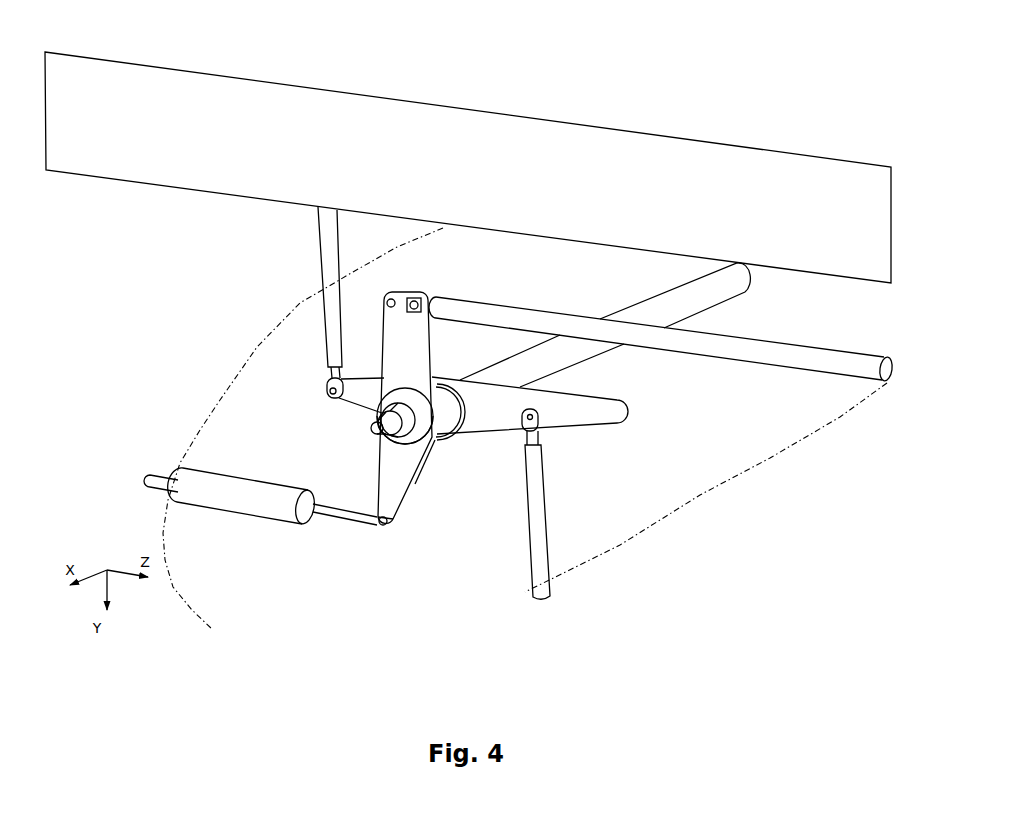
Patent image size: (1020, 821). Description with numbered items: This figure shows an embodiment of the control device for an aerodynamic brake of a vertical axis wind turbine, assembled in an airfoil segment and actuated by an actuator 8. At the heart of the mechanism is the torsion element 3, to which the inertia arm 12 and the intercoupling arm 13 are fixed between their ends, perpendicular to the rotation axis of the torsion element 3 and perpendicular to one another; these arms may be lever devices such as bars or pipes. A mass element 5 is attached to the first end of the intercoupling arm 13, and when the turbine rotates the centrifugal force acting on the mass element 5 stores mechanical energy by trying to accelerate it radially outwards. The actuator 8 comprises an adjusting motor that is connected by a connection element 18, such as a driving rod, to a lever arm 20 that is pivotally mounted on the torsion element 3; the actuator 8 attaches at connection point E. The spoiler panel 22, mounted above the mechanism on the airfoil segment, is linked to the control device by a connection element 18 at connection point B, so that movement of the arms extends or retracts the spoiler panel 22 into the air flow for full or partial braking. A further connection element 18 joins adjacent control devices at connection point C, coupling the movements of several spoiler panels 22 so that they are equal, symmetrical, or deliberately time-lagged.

The spoiler panel 22 is at (215, 134).
The connection element 18 is at (334, 259).
The connection point for a connection element between adjacent control devices C is at (421, 293).
The torsion element 3 is at (685, 297).
The mass element 5 is at (590, 409).
The intercoupling arm 13 is at (393, 346).
The connection point for a connection element between the mass component assembly an B is at (322, 392).
The actuator 8 is at (194, 488).
The connection point for an actuator E is at (375, 531).
The lever arm 20 is at (394, 495).
The inertia arm 12 is at (610, 423).